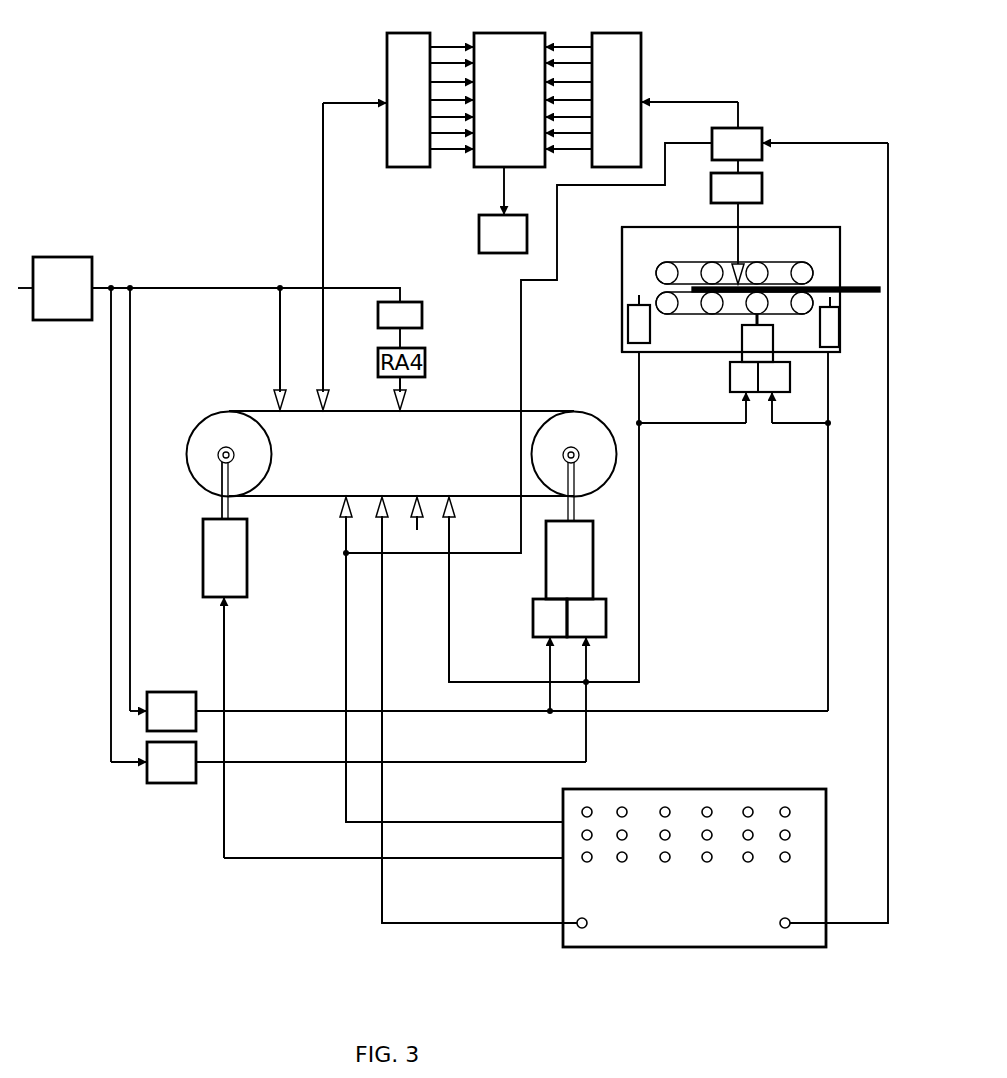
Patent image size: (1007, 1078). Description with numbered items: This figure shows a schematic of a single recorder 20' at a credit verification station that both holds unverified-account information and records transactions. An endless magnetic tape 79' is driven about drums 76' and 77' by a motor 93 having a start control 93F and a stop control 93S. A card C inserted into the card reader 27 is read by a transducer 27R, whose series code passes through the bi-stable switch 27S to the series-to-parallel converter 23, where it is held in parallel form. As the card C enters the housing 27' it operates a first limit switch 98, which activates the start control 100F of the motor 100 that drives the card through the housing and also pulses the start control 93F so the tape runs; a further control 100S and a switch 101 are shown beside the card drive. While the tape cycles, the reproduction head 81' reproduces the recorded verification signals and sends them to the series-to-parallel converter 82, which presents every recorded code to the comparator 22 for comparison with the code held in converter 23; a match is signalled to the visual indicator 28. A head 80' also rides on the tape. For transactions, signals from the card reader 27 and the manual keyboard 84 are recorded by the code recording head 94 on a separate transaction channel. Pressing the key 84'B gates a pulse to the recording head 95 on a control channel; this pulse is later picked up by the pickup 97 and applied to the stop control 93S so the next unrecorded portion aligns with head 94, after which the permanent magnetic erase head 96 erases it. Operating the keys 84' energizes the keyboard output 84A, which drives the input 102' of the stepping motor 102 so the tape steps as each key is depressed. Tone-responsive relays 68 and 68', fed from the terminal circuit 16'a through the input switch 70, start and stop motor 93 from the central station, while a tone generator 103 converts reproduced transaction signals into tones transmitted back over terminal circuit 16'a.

The series-to-parallel converter 82 is at (405, 65).
The comparator 22 is at (489, 44).
The series-to-parallel converter 23 is at (628, 50).
The visual indicator 28 is at (479, 236).
The bi-stable switch 27S is at (748, 143).
The card reader 27 is at (731, 262).
The transducer 27R is at (730, 280).
The housing 27' is at (593, 289).
The card C is at (845, 287).
The sensor 101 is at (628, 318).
The first limit switch 98 is at (834, 334).
The motor 100 is at (742, 338).
The motor start control 100S is at (730, 380).
The start control 100F is at (768, 393).
The terminal circuit input switch 70 is at (73, 312).
The terminal circuit 16'a is at (246, 271).
The tone generator 103 is at (400, 315).
The sensor 80' is at (252, 343).
The reproduction head 81' is at (343, 250).
The endless magnetic tape 79' is at (401, 434).
The drum 77' is at (210, 466).
The drum 76' is at (579, 453).
The stepping motor 102 is at (330, 487).
The input of stepping motor 102' is at (256, 728).
The single recorder 20' is at (177, 516).
The code recording head 94 is at (340, 497).
The recording head 95 is at (380, 497).
The permanent magnetic erase head 96 is at (420, 476).
The pickup 97 is at (452, 510).
The motor 93 is at (555, 568).
The start control 93F is at (548, 620).
The stop control 93S is at (598, 620).
The tone responsive relay 68 is at (171, 698).
The tone responsive relay 68' is at (167, 782).
The manual keyboard 84 is at (694, 852).
The keys 84' is at (777, 788).
The output of keyboard 84A is at (442, 860).
The key 84'B is at (597, 957).